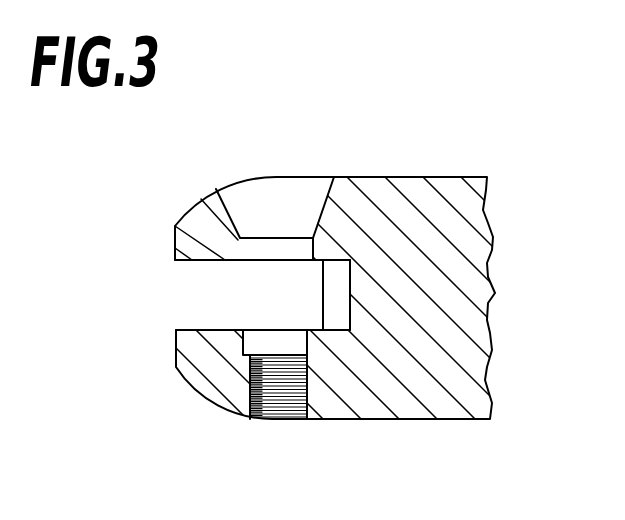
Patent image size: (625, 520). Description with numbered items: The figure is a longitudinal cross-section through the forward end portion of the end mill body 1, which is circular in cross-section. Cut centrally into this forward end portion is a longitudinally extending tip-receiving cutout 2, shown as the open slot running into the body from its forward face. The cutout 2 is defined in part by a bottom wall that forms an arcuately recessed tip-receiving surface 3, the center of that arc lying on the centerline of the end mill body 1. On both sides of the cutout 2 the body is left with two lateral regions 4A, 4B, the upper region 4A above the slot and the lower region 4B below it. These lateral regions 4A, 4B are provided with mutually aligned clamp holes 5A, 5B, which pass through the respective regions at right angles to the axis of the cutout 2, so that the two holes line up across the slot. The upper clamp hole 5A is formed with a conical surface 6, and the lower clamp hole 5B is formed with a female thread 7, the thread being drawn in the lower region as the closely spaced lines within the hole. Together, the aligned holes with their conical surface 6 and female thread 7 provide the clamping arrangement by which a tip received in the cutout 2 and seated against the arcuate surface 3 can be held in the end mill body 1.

The end mill body 1 is at (412, 419).
The tip-receiving cutout 2 is at (240, 314).
The arcuately recessed tip-receiving surface 3 is at (348, 309).
The lateral region 4A is at (197, 239).
The lateral region 4B is at (203, 360).
The upper clamp hole 5A is at (258, 247).
The lower clamp hole 5B is at (261, 345).
The conical surface 6 is at (326, 204).
The female thread 7 is at (283, 393).